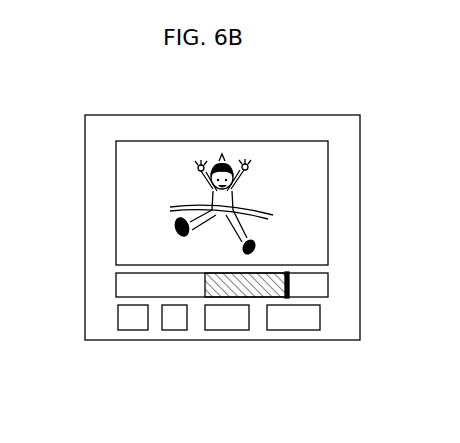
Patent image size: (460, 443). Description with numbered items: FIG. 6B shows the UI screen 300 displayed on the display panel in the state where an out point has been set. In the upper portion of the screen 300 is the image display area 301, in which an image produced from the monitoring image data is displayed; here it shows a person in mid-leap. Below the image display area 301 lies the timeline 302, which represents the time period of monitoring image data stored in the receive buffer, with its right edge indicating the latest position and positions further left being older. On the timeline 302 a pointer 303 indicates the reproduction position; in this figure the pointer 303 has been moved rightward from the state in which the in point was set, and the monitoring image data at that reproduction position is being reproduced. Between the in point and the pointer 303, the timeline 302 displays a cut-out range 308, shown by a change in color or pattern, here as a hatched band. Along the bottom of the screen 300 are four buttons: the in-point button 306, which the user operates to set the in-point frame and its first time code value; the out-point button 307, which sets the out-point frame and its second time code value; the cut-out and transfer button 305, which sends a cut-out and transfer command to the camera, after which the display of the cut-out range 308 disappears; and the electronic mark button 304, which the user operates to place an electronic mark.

The screen 300 is at (217, 115).
The image display area 301 is at (333, 204).
The timeline 302 is at (117, 287).
The pointer 303 is at (293, 285).
The electronic mark button 304 is at (302, 331).
The cut-out and transfer button 305 is at (223, 331).
The in-point button 306 is at (130, 331).
The out-point button 307 is at (172, 331).
The cut-out range 308 is at (258, 298).